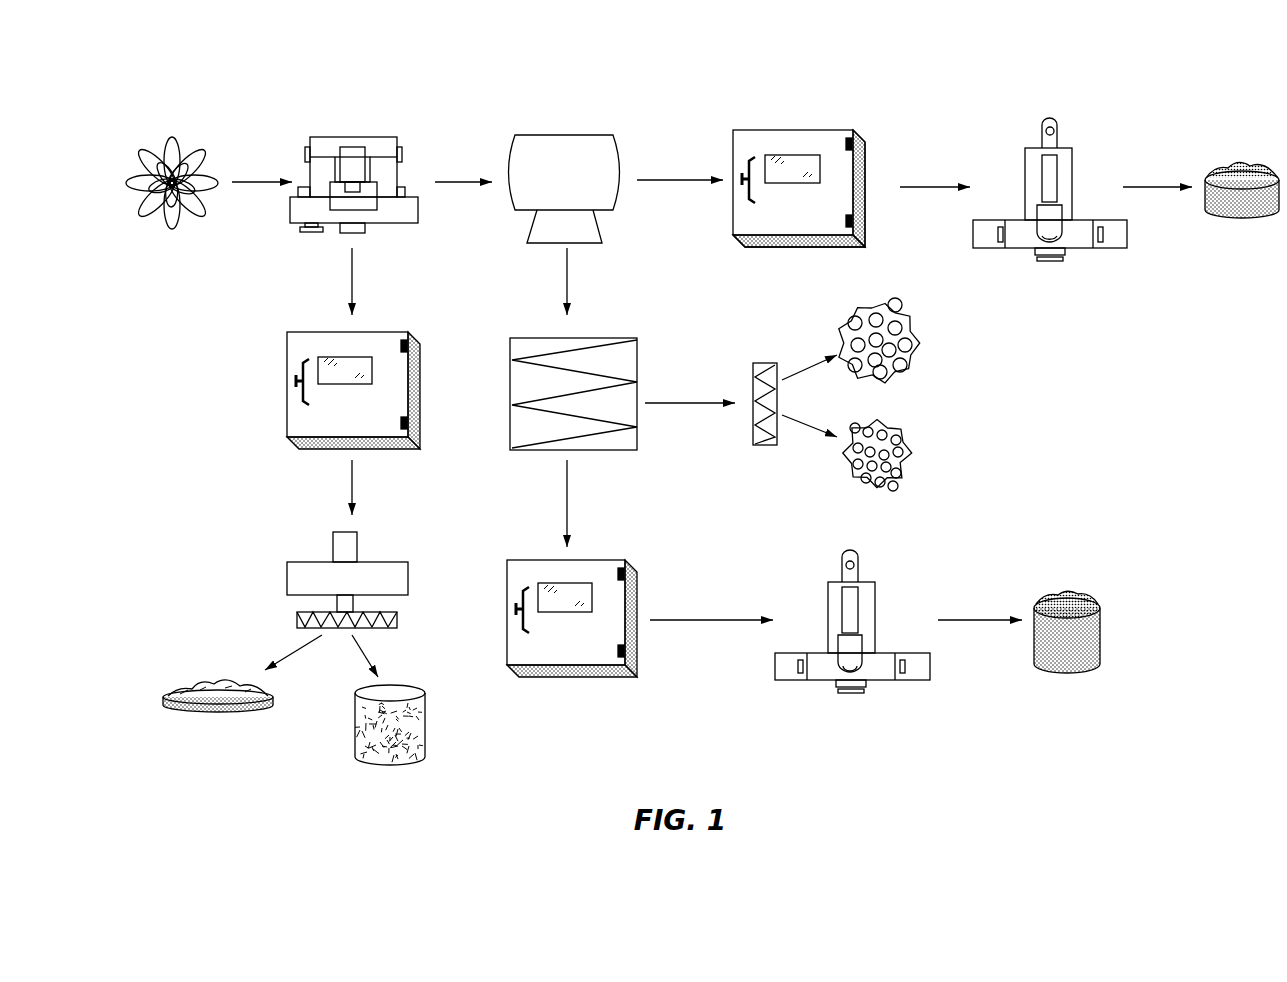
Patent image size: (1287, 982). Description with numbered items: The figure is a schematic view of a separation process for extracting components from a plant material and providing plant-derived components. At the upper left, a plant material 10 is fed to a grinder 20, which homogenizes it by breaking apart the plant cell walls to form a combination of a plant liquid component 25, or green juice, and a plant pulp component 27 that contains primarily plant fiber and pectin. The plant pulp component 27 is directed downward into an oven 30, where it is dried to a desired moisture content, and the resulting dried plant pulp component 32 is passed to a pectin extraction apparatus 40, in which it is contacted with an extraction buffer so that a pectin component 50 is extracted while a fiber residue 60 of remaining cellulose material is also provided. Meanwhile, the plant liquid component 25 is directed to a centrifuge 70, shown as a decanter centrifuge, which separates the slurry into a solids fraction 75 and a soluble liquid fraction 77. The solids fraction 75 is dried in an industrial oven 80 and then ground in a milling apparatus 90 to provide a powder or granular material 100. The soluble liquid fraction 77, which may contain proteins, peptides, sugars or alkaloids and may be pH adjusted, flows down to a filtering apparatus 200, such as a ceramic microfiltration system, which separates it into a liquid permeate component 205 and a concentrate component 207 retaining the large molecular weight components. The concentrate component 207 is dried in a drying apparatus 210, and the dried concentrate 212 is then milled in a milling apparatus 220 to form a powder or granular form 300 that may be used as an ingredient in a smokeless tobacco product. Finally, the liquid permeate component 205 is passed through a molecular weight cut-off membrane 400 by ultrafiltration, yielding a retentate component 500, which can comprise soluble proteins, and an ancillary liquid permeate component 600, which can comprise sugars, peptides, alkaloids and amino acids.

The plant material 10 is at (178, 132).
The grinder 20 is at (363, 130).
The plant liquid component 25 is at (463, 170).
The plant pulp component 27 is at (339, 281).
The oven 30 is at (275, 355).
The dried plant pulp component 32 is at (338, 487).
The pectin extraction apparatus 40 is at (288, 540).
The pectin component 50 is at (218, 668).
The fiber residue 60 is at (350, 743).
The centrifuge 70 is at (570, 128).
The solids fraction 75 is at (680, 170).
The soluble liquid fraction 77 is at (554, 281).
The industrial oven 80 is at (800, 120).
The milling apparatus 90 is at (1068, 128).
The powder or granular material 100 is at (1235, 150).
The filtering apparatus 200 is at (518, 325).
The liquid permeate component 205 is at (690, 392).
The concentrate component 207 is at (548, 503).
The drying apparatus 210 is at (597, 683).
The dried concentrate 212 is at (711, 608).
The milling apparatus 220 is at (902, 692).
The powder or granular form 300 is at (1095, 587).
The molecular weight cut-off membrane 400 is at (750, 350).
The retentate component 500 is at (922, 333).
The ancillary liquid permeate component 600 is at (910, 448).